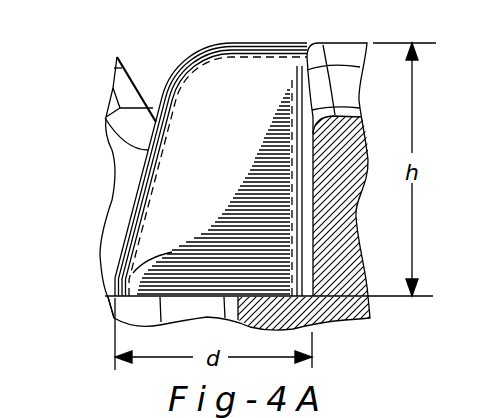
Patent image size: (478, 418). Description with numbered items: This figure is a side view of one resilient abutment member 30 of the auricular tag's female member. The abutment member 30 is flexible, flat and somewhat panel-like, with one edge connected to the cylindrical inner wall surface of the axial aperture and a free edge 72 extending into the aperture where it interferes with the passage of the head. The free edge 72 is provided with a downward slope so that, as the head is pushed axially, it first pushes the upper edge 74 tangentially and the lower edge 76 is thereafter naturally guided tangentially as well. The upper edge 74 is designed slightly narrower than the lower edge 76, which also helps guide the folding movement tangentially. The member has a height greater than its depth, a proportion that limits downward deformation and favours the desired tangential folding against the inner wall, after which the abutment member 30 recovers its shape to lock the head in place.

The resilient abutment member 30 is at (222, 178).
The free edge 72 is at (131, 214).
The upper edge 74 is at (177, 68).
The lower edge 76 is at (128, 264).